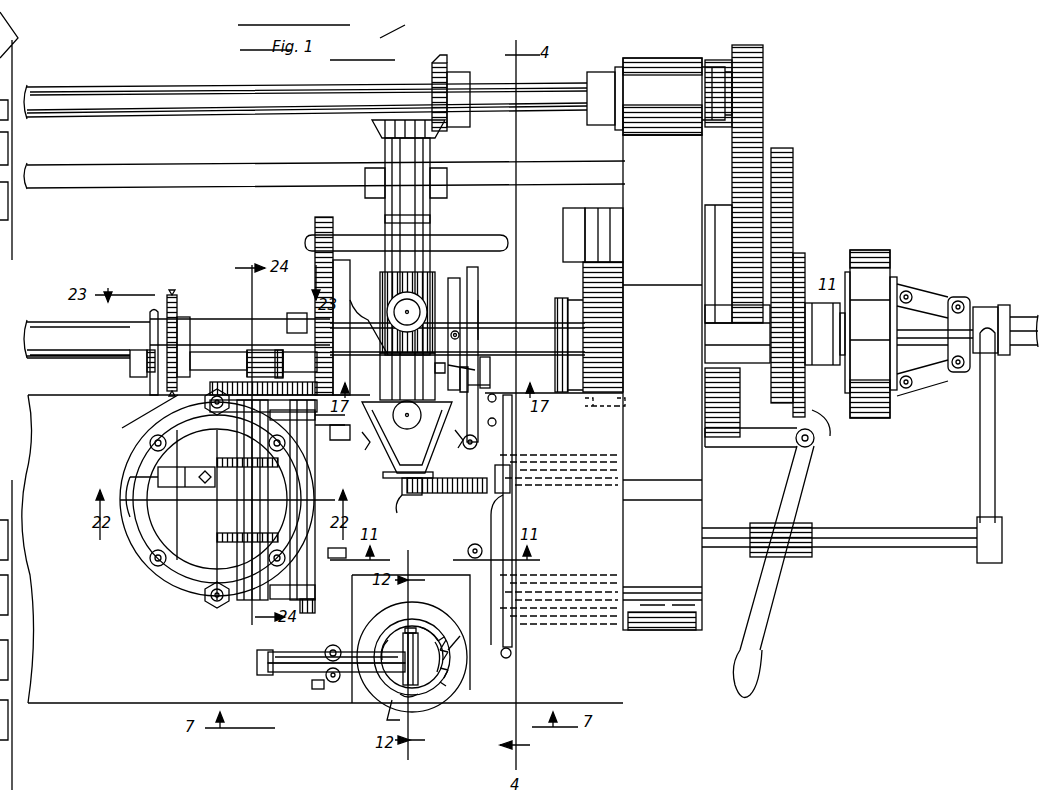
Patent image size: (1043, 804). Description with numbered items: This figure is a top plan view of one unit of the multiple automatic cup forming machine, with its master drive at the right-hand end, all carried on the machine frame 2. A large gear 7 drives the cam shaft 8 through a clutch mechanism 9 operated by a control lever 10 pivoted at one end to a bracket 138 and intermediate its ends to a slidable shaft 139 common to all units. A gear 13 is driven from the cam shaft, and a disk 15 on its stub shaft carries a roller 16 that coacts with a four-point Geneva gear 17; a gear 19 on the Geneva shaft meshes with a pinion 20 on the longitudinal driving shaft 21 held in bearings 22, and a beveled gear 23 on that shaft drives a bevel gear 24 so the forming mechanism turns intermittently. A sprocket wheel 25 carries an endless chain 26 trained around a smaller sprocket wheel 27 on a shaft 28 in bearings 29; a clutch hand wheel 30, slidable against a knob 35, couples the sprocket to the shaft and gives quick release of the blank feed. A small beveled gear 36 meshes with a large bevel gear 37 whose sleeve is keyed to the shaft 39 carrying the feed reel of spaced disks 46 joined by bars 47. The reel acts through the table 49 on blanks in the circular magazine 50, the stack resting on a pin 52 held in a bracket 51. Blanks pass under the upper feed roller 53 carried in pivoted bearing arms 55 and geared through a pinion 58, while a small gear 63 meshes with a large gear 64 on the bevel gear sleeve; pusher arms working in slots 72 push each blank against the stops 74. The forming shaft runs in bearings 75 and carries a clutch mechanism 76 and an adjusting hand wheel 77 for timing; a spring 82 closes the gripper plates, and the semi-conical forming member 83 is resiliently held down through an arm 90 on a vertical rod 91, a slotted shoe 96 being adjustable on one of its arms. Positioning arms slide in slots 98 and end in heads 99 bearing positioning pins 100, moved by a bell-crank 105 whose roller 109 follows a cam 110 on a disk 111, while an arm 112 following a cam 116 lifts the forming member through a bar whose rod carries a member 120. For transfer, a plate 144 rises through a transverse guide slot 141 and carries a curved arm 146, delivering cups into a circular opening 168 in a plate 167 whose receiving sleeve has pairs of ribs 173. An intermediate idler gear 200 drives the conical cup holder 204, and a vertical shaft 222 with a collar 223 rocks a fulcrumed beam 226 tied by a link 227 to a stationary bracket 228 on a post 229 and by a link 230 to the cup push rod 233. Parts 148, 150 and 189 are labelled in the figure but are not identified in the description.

The machine frame 2 is at (662, 382).
The large gear 7 is at (727, 410).
The cam shaft 8 is at (1012, 317).
The clutch mechanism 9 is at (872, 272).
The control lever 10 is at (785, 500).
The gear 13 is at (595, 296).
The disk 15 is at (840, 430).
The roller 16 is at (800, 285).
The four-point Geneva gear 17 is at (788, 190).
The gear 19 is at (748, 187).
The pinion 20 is at (763, 78).
The longitudinal driving shaft 21 is at (212, 95).
The bearings 22 is at (659, 96).
The beveled gear 23 is at (432, 75).
The bevel gear 24 is at (372, 128).
The sprocket wheel 25 is at (173, 292).
The endless chain 26 is at (185, 322).
The smaller sprocket wheel 27 is at (141, 422).
The shaft 28 is at (255, 350).
The bearings 29 is at (222, 345).
The clutch hand wheel 30 is at (154, 315).
The knob 35 is at (130, 360).
The small beveled gear 36 is at (282, 350).
The large bevel gear 37 is at (245, 350).
The shaft 39 is at (205, 592).
The circular plates or disks 46 is at (228, 460).
The reel bars 47 is at (240, 518).
The table 49 is at (322, 548).
The circular magazine 50 is at (140, 530).
The bracket 51 is at (195, 465).
The pin 52 is at (150, 500).
The upper feed roller 53 is at (312, 450).
The pivoted bearing arms 55 is at (263, 405).
The pinion or gear 58 is at (295, 605).
The small gear 63 is at (332, 306).
The large gear 64 is at (210, 387).
The slots 72 is at (360, 460).
The rollers or stops 74 is at (475, 545).
The bearings 75 is at (432, 192).
The clutch mechanism 76 is at (430, 218).
The adjusting hand wheel 77 is at (472, 236).
The spring 82 is at (395, 372).
The forming member 83 is at (407, 437).
The arm 90 is at (364, 325).
The vertical rod 91 is at (406, 312).
The slotted shoe 96 is at (480, 370).
The slots 98 is at (407, 417).
The heads 99 is at (479, 433).
The positioning pins 100 is at (412, 448).
The bell-crank 105 is at (490, 385).
The roller 109 is at (470, 370).
The cam 110 is at (475, 278).
The cam disk 111 is at (478, 310).
The arm 112 is at (478, 300).
The cam 116 is at (449, 323).
The member 120 is at (445, 368).
The bracket 138 is at (765, 445).
The slidable shaft 139 is at (870, 540).
The transverse guide slot 141 is at (512, 640).
The plate 144 is at (510, 478).
The curved or arched arm 146 is at (512, 520).
The bar 148 is at (435, 490).
The hook 150 is at (402, 498).
The plate 167 is at (470, 580).
The circular opening 168 is at (385, 700).
The ribs 173 is at (425, 627).
The base 189 is at (668, 610).
The intermediate idler gear 200 is at (468, 670).
The conical cup holder 204 is at (428, 705).
The vertical rod or shaft 222 is at (333, 683).
The collar 223 is at (315, 690).
The beam 226 is at (295, 672).
The link 227 is at (257, 665).
The stationary bracket 228 is at (336, 649).
The vertical standard or post 229 is at (340, 638).
The link 230 is at (426, 656).
The cup push rod 233 is at (448, 650).